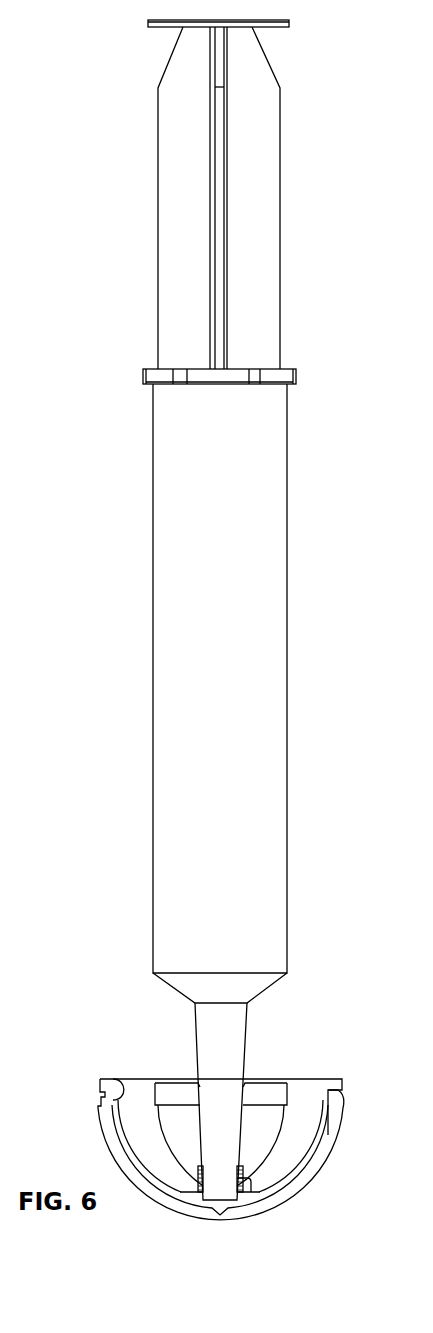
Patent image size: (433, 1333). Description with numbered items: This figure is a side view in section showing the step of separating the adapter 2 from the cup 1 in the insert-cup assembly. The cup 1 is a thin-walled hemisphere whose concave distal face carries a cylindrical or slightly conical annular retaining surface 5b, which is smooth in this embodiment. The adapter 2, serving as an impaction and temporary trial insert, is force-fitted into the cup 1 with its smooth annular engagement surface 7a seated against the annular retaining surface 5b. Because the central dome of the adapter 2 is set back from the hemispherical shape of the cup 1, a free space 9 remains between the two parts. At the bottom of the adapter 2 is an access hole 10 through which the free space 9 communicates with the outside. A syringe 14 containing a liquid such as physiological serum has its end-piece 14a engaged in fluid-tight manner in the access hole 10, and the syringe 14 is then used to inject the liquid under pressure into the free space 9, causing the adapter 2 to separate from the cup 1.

The cup 1 is at (291, 1192).
The adapter 2 is at (308, 1090).
The annular retaining surface 5b is at (98, 1110).
The annular engagement surface 7a is at (117, 1080).
The free space 9 is at (190, 1198).
The access hole 10 is at (247, 1180).
The syringe 14 is at (249, 620).
The end-piece 14a is at (227, 1047).